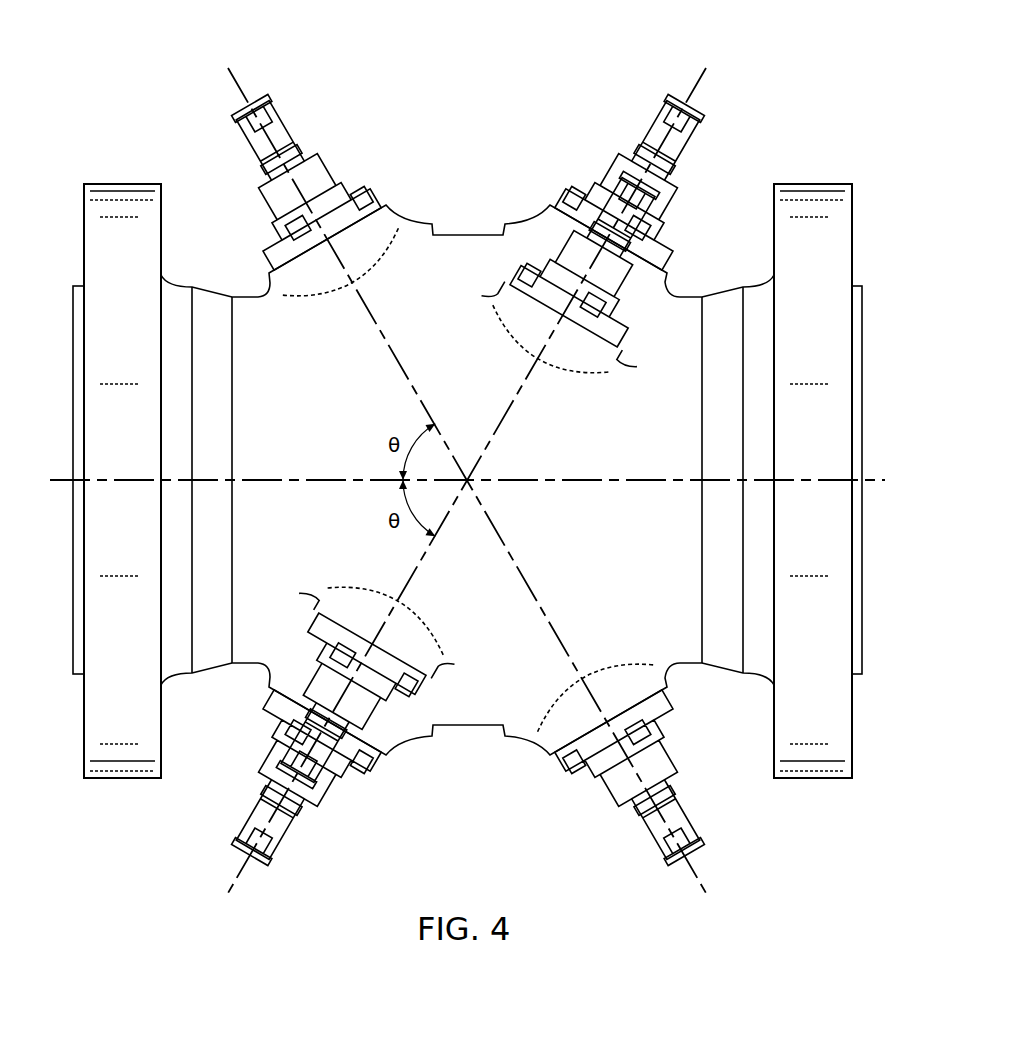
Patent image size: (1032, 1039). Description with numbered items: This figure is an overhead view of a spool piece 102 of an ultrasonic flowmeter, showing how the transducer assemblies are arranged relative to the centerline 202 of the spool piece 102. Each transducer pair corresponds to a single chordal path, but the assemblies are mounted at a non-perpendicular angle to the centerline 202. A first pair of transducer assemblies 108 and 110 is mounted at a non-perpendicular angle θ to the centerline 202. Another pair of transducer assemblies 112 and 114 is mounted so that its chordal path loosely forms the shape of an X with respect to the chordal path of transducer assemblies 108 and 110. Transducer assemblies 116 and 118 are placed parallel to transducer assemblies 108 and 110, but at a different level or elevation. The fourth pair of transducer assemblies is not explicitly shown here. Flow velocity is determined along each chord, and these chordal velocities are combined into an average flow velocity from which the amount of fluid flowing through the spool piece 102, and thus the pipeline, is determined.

The spool piece 102 is at (466, 233).
The transducer assembly 108 is at (317, 637).
The transducer assembly 110 is at (622, 328).
The transducer assembly 112 is at (608, 793).
The transducer assembly 114 is at (330, 172).
The transducer assembly 116 is at (287, 843).
The transducer assembly 118 is at (650, 123).
The centerline 202 is at (596, 487).